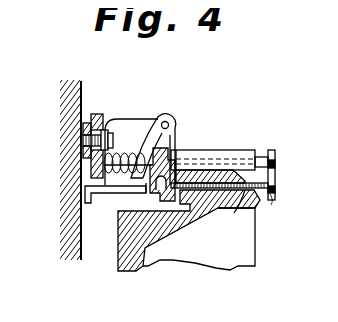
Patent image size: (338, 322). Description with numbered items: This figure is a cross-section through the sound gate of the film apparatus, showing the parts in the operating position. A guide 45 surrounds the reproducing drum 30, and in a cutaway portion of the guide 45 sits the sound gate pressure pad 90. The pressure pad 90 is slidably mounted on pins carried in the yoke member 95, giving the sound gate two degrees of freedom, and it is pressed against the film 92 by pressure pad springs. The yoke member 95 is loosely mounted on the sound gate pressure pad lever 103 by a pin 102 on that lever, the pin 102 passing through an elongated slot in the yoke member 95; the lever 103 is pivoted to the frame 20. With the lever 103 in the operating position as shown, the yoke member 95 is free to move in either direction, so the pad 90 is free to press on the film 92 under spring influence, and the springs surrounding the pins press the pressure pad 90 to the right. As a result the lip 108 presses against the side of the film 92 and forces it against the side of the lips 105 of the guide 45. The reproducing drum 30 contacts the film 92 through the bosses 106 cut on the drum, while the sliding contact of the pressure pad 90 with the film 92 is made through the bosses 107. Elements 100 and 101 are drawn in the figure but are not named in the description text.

The frame 20 is at (51, 111).
The sound gate pressure pad lever 103 is at (78, 113).
The yoke member 95 is at (94, 106).
The pin 102 is at (110, 132).
The housing 101 is at (126, 111).
The latch lever 100 is at (148, 112).
The lip 108 is at (158, 189).
The guide 45 is at (115, 195).
The sound gate pressure pad 90 is at (178, 142).
The bosses 107 is at (240, 173).
The bosses 106 is at (183, 178).
The reproducing drum 30 is at (189, 230).
The lips 105 is at (259, 186).
The film 92 is at (242, 188).